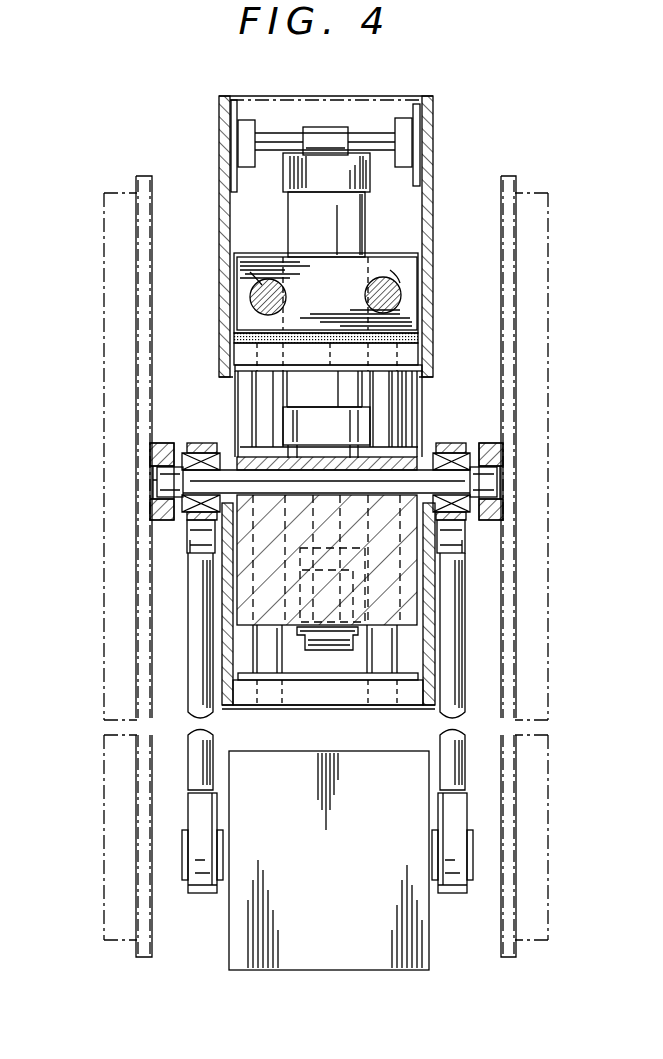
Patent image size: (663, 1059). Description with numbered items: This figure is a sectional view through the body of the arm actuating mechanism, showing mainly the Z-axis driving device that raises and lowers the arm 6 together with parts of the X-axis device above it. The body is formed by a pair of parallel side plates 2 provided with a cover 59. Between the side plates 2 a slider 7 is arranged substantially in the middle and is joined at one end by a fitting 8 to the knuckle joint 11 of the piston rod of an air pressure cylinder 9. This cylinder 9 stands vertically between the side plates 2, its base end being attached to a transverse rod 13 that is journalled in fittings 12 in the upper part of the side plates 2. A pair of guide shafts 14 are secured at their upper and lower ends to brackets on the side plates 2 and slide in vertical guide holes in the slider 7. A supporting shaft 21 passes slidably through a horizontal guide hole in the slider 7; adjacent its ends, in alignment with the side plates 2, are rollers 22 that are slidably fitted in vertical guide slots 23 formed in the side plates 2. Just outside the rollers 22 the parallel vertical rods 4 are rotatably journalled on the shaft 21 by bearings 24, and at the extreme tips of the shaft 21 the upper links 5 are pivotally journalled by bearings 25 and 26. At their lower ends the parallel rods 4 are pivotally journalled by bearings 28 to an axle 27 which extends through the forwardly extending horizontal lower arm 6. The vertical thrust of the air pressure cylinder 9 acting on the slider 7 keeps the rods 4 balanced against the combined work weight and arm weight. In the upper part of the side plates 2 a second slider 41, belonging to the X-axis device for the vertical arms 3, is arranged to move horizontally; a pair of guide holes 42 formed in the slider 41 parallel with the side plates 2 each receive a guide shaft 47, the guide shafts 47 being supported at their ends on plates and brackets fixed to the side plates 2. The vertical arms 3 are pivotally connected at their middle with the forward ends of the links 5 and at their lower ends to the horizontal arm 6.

The side plates 2 is at (219, 173).
The vertical arms 3 is at (128, 580).
The parallel vertical rods 4 is at (200, 636).
The upper links 5 is at (160, 445).
The arm 6 is at (232, 948).
The slider 7 is at (245, 620).
The fitting 8 is at (300, 625).
The air pressure cylinder 9 is at (365, 225).
The knuckle joint 11 is at (330, 650).
The fittings 12 is at (230, 143).
The transverse rod 13 is at (362, 136).
The guide shafts 14 is at (267, 663).
The supporting shaft 21 is at (415, 470).
The rollers 22 is at (222, 455).
The vertical guide slots 23 is at (226, 392).
The bearings 24 is at (192, 443).
The bearing 25 is at (157, 484).
The bearing 26 is at (168, 520).
The axle 27 is at (227, 883).
The bearings 28 is at (183, 870).
The second slider 41 is at (275, 262).
The guide holes 42 is at (258, 282).
The guide shafts 47 is at (256, 302).
The cover 59 is at (101, 285).